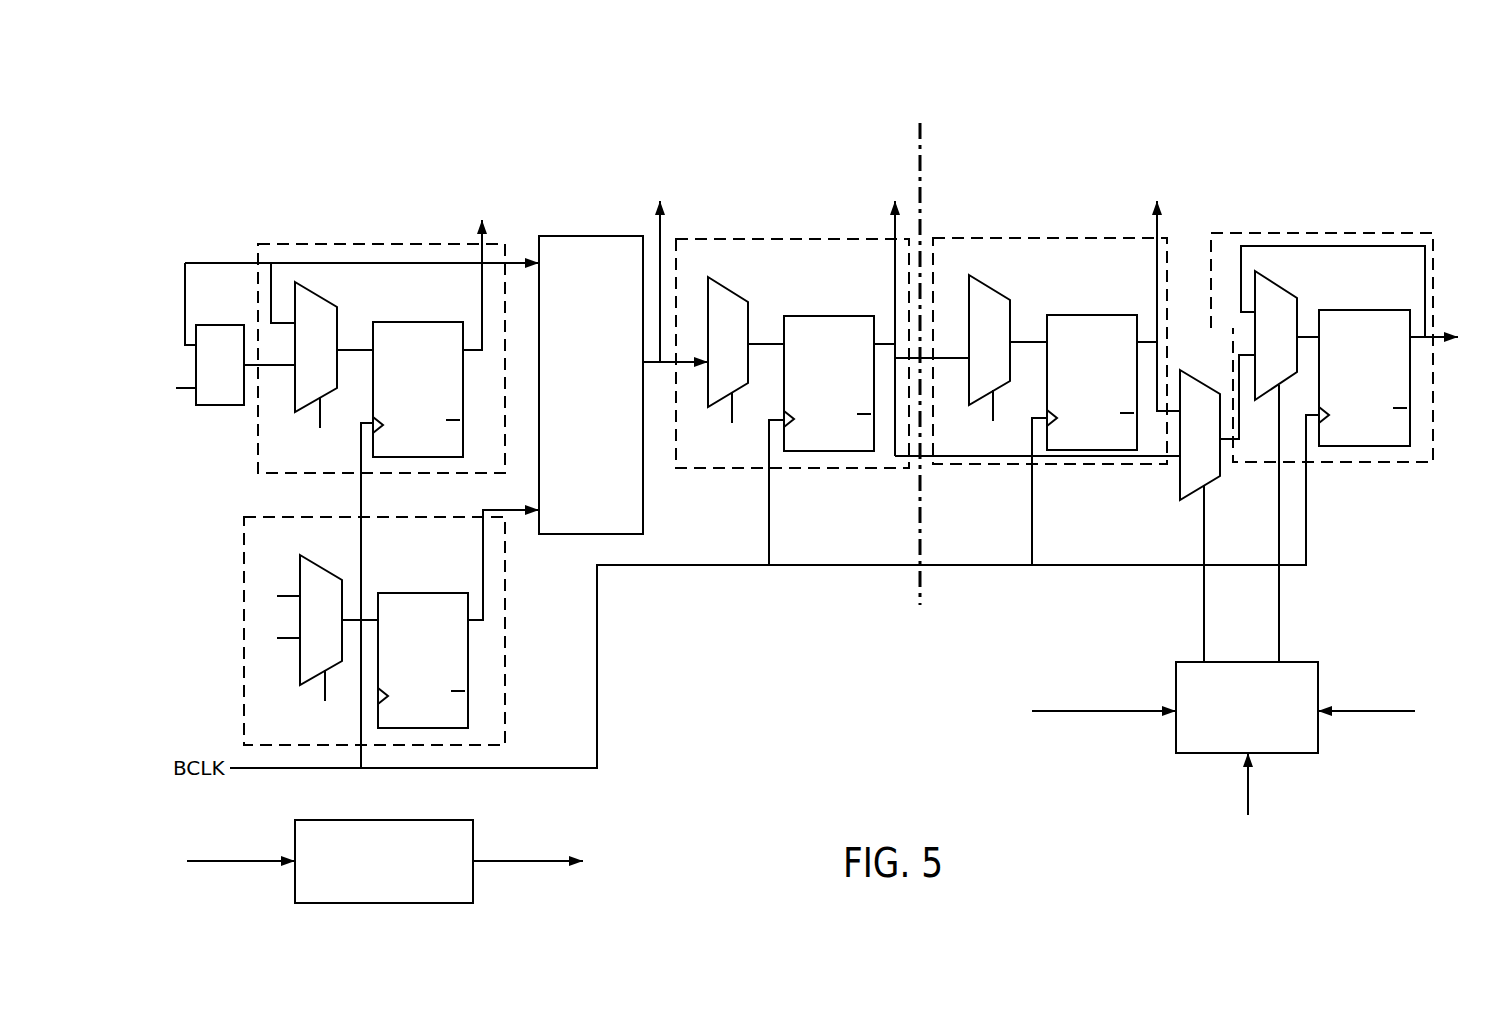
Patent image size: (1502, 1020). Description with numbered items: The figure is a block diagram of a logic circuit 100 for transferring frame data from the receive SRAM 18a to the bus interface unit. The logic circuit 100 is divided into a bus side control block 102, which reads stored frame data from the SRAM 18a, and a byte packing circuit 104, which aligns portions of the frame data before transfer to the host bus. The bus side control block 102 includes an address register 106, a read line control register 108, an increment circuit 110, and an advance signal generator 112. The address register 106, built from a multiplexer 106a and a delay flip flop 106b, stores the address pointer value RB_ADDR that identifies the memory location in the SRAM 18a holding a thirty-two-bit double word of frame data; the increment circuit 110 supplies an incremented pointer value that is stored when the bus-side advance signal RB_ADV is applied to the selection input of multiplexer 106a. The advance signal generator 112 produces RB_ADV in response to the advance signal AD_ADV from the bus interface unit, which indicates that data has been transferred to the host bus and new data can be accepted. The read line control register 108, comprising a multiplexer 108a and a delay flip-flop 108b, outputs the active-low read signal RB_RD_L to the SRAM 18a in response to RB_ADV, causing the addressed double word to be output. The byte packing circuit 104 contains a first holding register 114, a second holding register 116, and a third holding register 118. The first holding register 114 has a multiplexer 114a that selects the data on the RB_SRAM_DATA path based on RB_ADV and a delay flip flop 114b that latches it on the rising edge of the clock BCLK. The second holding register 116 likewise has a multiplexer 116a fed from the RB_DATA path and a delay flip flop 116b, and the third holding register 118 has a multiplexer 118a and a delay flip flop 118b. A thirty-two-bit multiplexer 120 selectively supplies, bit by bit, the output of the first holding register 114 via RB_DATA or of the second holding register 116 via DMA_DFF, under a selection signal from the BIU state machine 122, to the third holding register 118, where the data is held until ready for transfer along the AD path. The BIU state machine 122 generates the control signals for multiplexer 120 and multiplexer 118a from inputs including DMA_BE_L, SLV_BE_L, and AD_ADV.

The logic circuit 100 is at (987, 82).
The bus side control block 102 is at (381, 144).
The byte packing circuit 104 is at (1247, 126).
The address register 106 is at (262, 243).
The multiplexer 106a is at (322, 307).
The delay flip flop 106b is at (418, 321).
The read line control register 108 is at (505, 632).
The multiplexer 108a is at (300, 567).
The delay flip-flop 108b is at (420, 592).
The increment circuit 110 is at (241, 399).
The advance signal generator 112 is at (398, 820).
The first holding register 114 is at (701, 469).
The multiplexer 114a is at (730, 298).
The delay flip flop 114b is at (833, 316).
The second holding register 116 is at (988, 465).
The multiplexer 116a is at (990, 292).
The delay flip flop 116b is at (1097, 315).
The third holding register 118 is at (1390, 463).
The multiplexer 118a is at (1275, 291).
The delay flip flop 118b is at (1368, 310).
The 32-bit multiplexer 120 is at (1179, 485).
The BIU state machine 122 is at (1310, 667).
The receive SRAM 18a is at (575, 236).